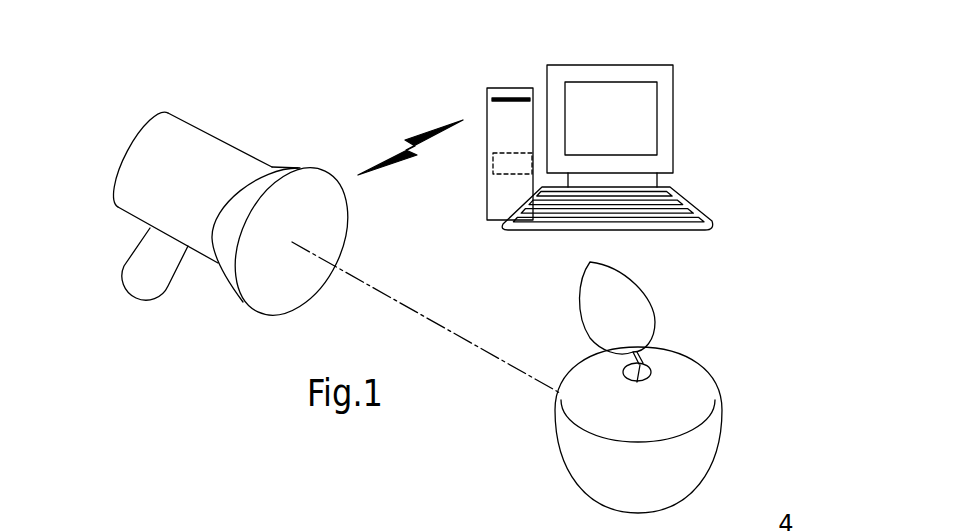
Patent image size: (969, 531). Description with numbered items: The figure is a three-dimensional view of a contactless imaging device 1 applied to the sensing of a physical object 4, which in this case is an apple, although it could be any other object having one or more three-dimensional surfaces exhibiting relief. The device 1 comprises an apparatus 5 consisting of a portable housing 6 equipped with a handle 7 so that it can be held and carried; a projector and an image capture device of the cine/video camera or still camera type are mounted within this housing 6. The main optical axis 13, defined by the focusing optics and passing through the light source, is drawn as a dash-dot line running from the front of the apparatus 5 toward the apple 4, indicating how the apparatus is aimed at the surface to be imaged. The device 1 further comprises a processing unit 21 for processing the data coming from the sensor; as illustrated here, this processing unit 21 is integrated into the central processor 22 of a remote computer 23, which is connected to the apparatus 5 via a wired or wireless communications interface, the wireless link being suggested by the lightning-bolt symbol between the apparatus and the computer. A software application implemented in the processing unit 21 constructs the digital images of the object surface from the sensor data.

The contactless imaging device 1 is at (359, 98).
The physical object 4 is at (714, 356).
The apparatus 5 is at (215, 184).
The portable housing 6 is at (125, 175).
The handle 7 is at (157, 282).
The main optical axis 13 is at (418, 313).
The processing unit 21 is at (500, 175).
The central processor 22 is at (477, 145).
The remote computer 23 is at (688, 75).